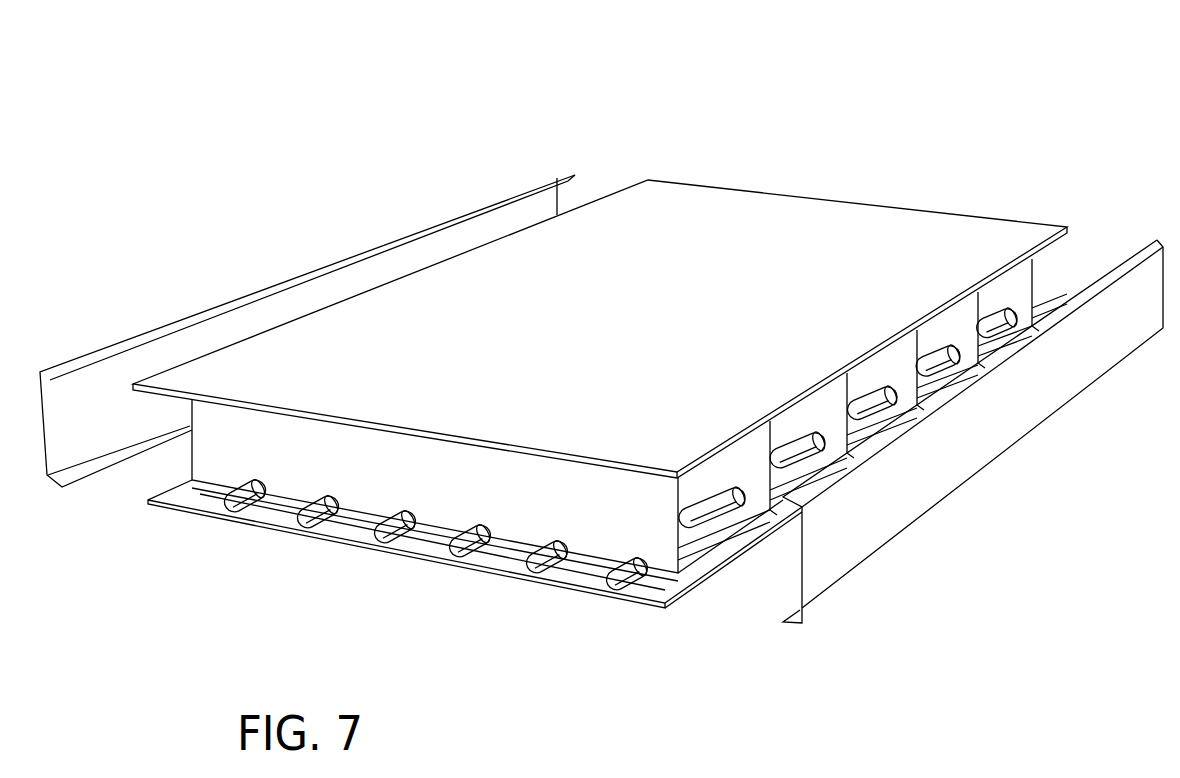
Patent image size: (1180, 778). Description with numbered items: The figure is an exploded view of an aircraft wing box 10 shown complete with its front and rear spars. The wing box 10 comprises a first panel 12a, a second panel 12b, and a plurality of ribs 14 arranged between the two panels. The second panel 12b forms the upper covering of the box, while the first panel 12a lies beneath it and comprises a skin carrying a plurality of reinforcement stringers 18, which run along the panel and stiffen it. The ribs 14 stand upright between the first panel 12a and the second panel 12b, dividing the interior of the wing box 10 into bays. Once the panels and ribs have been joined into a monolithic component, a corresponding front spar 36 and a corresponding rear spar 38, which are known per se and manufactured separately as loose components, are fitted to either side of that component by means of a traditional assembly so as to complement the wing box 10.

The wing box 10 is at (588, 366).
The first panel 12a is at (488, 567).
The second panel 12b is at (790, 215).
The ribs 14 is at (762, 468).
The reinforcement stringers 18 is at (340, 525).
The front spar 36 is at (933, 470).
The rear spar 38 is at (285, 280).